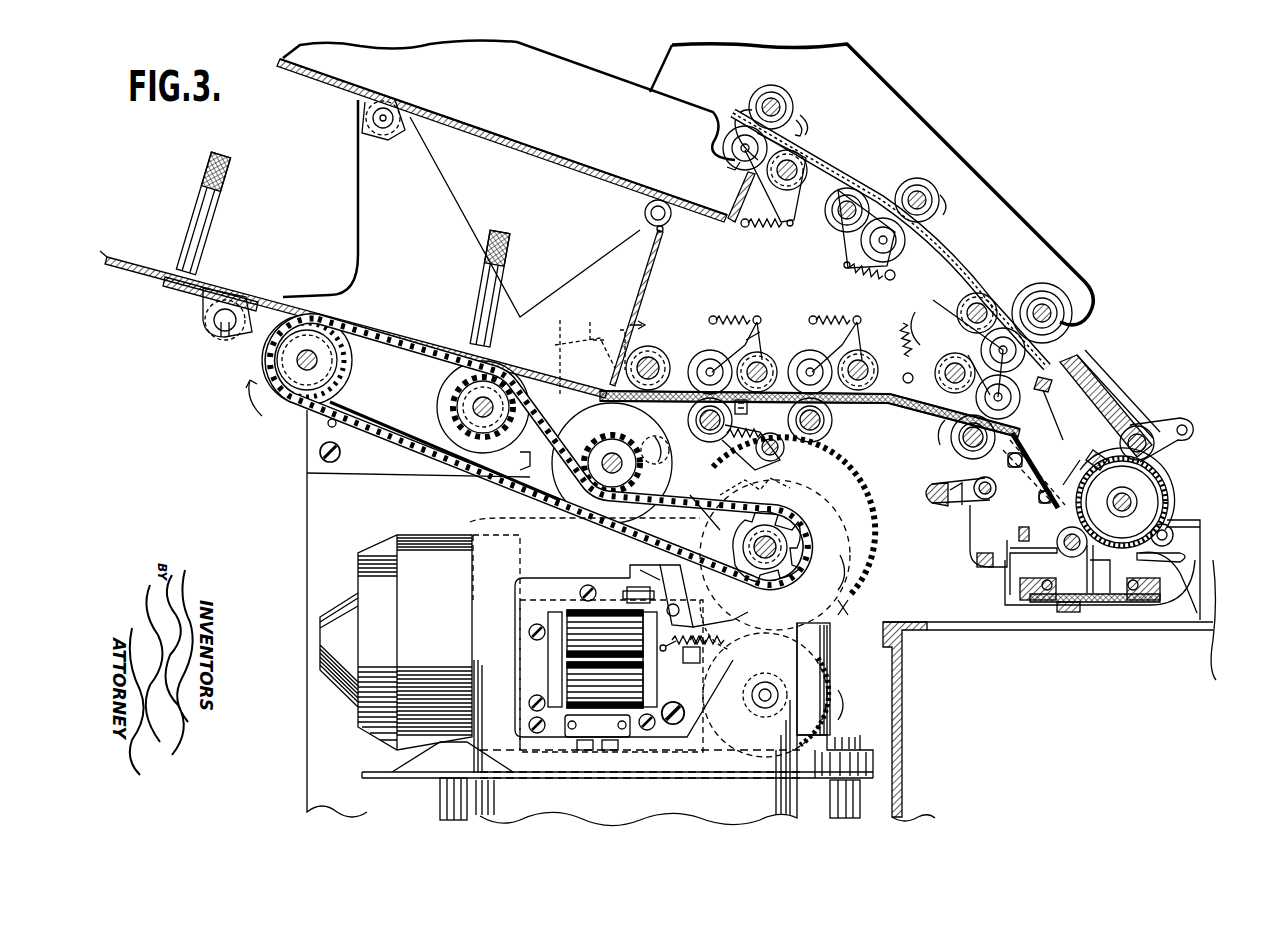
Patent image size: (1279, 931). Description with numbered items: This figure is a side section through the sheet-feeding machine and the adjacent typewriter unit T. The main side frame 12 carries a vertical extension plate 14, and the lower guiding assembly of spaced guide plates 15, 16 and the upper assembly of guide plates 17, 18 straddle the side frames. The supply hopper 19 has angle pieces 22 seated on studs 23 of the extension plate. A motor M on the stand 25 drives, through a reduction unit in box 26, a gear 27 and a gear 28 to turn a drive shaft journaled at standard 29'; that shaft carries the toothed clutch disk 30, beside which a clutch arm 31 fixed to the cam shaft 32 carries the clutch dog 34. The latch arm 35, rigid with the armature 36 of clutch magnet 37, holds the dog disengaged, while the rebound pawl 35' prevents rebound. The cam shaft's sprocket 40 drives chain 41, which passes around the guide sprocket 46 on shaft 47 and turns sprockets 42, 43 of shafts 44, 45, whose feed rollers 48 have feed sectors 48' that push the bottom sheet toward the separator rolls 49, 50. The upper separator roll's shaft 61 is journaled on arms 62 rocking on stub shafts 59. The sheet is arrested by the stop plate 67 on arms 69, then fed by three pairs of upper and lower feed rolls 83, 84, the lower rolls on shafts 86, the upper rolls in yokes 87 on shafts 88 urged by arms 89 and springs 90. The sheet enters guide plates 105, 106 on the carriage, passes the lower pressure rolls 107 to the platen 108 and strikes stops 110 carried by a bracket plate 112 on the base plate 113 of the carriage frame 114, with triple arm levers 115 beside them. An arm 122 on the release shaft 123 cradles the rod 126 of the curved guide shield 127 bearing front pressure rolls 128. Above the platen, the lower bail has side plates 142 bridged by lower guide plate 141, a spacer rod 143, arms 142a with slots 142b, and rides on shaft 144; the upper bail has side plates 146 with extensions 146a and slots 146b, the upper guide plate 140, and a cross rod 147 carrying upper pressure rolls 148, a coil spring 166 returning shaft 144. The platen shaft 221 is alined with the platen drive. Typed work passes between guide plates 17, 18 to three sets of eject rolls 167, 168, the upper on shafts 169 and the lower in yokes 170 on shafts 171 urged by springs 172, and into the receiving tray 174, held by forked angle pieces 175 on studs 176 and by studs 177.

The main side frame 12 is at (312, 516).
The vertical extension plate 14 is at (432, 206).
The lower guide plate 15 is at (885, 398).
The lower guide plate 16 is at (870, 405).
The guide plate 17 is at (810, 185).
The guide plate 18 is at (808, 196).
The supply hopper 19 is at (283, 305).
The angle piece 22 is at (202, 304).
The stud 23 is at (224, 332).
The stand 25 is at (412, 778).
The box 26 is at (820, 640).
The gear 27 is at (820, 686).
The gear 28 is at (851, 611).
The vertical standard 29' is at (554, 628).
The toothed clutch disk 30 is at (845, 538).
The clutch arm 31 is at (705, 505).
The cam shaft 32 is at (800, 520).
The clutch dog 34 is at (772, 500).
The latch arm 35 is at (646, 585).
The rebound pawl 35' is at (720, 619).
The armature 36 is at (655, 673).
The clutch magnet 37 is at (567, 673).
The sprocket 40 is at (755, 590).
The chain 41 is at (492, 482).
The sprocket 42 is at (340, 392).
The sprocket 43 is at (455, 418).
The shaft 44 is at (322, 370).
The shaft 45 is at (470, 396).
The guide sprocket 46 is at (628, 450).
The shaft 47 is at (645, 478).
The feed roller 48 is at (583, 393).
The feed sector 48' is at (358, 249).
The upper separator roll 49 is at (660, 355).
The lower separator roll 50 is at (535, 490).
The stub shaft 59 is at (580, 368).
The shaft 61 is at (625, 335).
The arm 62 is at (586, 324).
The stop plate 67 is at (703, 465).
The arm 69 is at (748, 420).
The upper feed roll 83 is at (735, 345).
The lower feed roll 84 is at (818, 438).
The shaft 86 is at (783, 452).
The yoke 87 is at (852, 352).
The shaft 88 is at (764, 340).
The arm 89 is at (768, 330).
The spring 90 is at (733, 318).
The upper guide plate 105 is at (1055, 455).
The lower guide plate 106 is at (1013, 470).
The lower pressure roll 107 is at (1045, 504).
The platen 108 is at (1150, 475).
The stop 110 is at (1118, 512).
The bracket plate 112 is at (1110, 608).
The base plate 113 is at (1085, 608).
The carriage frame 114 is at (1000, 580).
The triple arm lever 115 is at (1083, 572).
The arm 122 is at (1160, 585).
The release shaft 123 is at (1200, 558).
The rod 126 is at (1142, 608).
The curved guide shield 127 is at (1172, 525).
The front pressure roll 128 is at (1185, 535).
The upper guide plate 140 is at (1080, 365).
The lower guide plate 141 is at (1110, 390).
The side plate 142 is at (1125, 410).
The forwardly extending arm 142a is at (1185, 420).
The elongated slot 142b is at (1195, 430).
The spacer rod 143 is at (955, 500).
The shaft 144 is at (975, 518).
The side plate 146 is at (1095, 370).
The rearward extension 146a is at (940, 484).
The elongated slot 146b is at (930, 497).
The front cross rod 147 is at (1138, 426).
The upper pressure roll 148 is at (1150, 432).
The coil spring 166 is at (975, 480).
The upper eject roll 167 is at (794, 100).
The lower eject roll 168 is at (738, 160).
The shaft 169 is at (917, 190).
The yoke 170 is at (795, 133).
The shaft 171 is at (977, 295).
The spring 172 is at (767, 228).
The receiving tray 174 is at (318, 76).
The forked angle piece 175 is at (366, 112).
The stud 176 is at (383, 129).
The stud 177 is at (663, 226).
The platen shaft 221 is at (1130, 500).
The motor M is at (401, 654).
The typewriter unit T is at (897, 620).